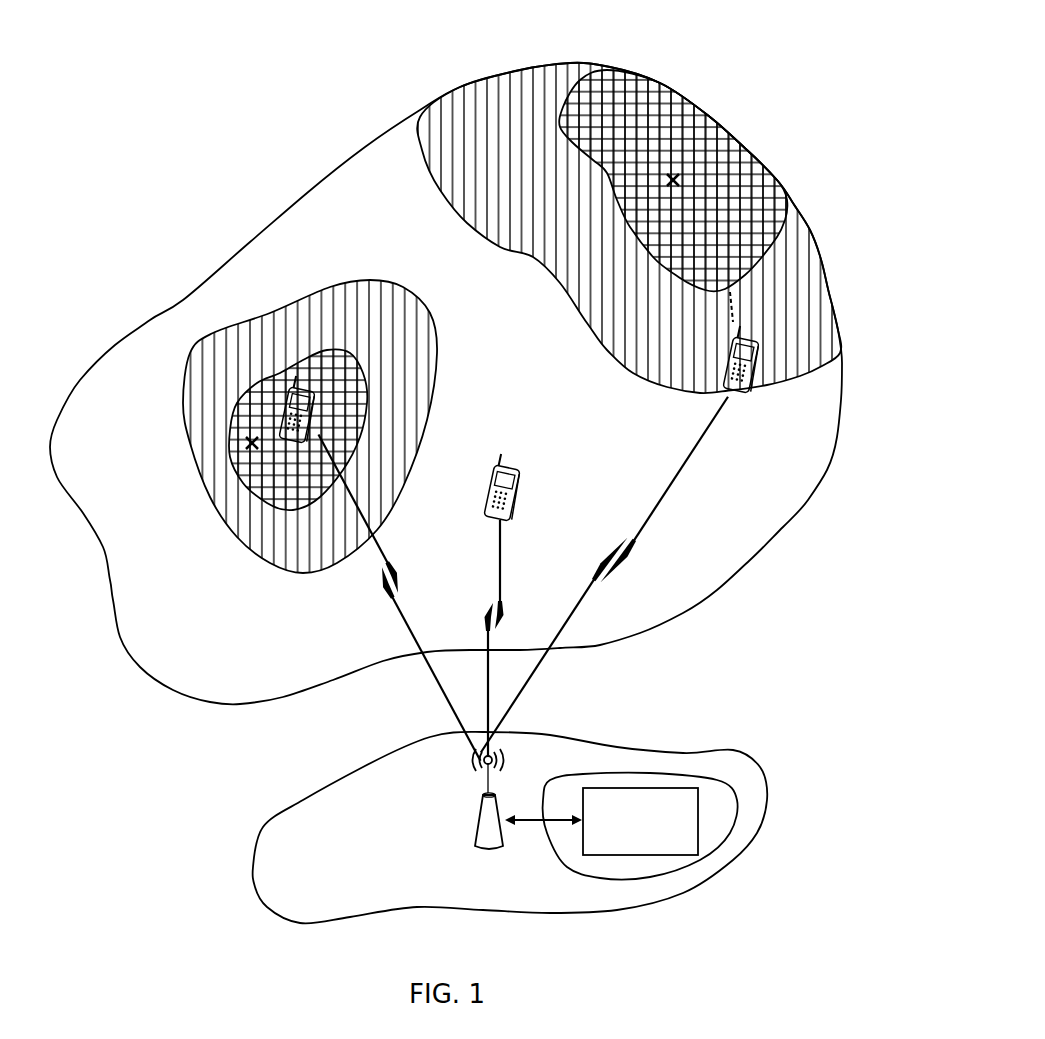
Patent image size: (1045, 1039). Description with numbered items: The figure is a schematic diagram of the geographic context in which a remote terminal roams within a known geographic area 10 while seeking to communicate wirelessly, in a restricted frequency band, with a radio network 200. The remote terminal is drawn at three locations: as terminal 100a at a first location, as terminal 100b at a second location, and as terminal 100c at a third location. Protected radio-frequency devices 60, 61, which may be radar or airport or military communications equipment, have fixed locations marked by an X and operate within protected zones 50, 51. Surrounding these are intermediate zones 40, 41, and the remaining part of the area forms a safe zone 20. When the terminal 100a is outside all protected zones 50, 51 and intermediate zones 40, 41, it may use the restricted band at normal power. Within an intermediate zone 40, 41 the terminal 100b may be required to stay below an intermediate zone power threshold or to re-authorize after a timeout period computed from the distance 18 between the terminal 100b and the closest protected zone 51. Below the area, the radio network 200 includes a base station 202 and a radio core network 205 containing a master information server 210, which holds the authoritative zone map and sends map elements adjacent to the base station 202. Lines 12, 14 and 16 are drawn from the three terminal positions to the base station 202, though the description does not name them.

The geographic area 10 is at (339, 92).
The safe zone 20 is at (312, 196).
The intermediate zone 41 is at (533, 257).
The protected zone 51 is at (640, 92).
The protected radio-frequency device 61 is at (680, 178).
The distance 18 is at (737, 310).
The intermediate zone 40 is at (303, 562).
The protected zone 50 is at (258, 472).
The protected radio-frequency device 60 is at (245, 443).
The remote terminal 100a is at (510, 462).
The remote terminal 100b is at (728, 360).
The remote terminal 100c is at (288, 398).
The communication link 12 is at (432, 668).
The communication link 14 is at (497, 553).
The communication link 16 is at (527, 698).
The radio network 200 is at (300, 840).
The base station 202 is at (475, 801).
The radio core network 205 is at (653, 867).
The master information server 210 is at (627, 846).